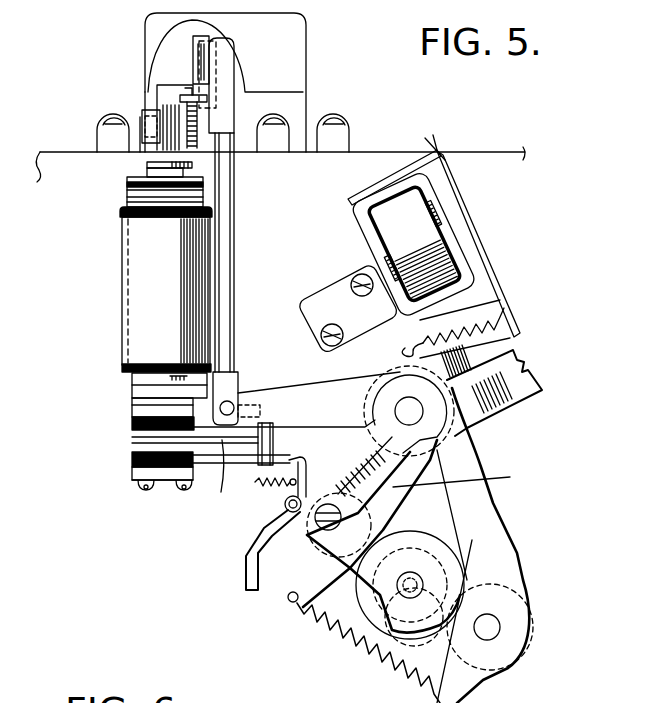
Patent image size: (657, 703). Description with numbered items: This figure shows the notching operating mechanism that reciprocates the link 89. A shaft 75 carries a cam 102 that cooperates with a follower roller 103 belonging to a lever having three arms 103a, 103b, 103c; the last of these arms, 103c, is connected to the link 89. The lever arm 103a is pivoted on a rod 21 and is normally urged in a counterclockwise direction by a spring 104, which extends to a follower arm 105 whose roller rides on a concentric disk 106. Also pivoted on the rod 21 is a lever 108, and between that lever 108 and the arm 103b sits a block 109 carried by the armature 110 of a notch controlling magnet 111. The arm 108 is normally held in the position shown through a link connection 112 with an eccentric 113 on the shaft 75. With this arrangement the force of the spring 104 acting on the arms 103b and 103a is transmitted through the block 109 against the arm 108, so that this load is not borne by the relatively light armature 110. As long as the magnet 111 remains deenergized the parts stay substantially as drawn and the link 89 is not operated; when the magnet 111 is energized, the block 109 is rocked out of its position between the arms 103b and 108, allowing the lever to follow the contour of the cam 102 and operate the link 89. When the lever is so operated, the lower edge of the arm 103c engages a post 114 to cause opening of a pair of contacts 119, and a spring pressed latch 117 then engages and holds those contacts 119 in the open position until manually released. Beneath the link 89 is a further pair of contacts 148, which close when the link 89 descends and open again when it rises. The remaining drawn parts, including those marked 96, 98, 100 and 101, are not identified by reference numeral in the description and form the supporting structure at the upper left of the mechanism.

The rod 21 is at (467, 433).
The shaft 75 is at (414, 624).
The link 89 is at (230, 202).
The guide plate 96 is at (204, 37).
The adjusting screw 98 is at (180, 84).
The solenoid 100 is at (143, 257).
The bracket 101 is at (158, 115).
The cam 102 is at (377, 622).
The follower roller 103 is at (323, 564).
The lever arm 103a is at (472, 478).
The lever arm 103b is at (540, 390).
The lever arm 103c is at (257, 393).
The spring 104 is at (407, 680).
The follower arm 105 is at (512, 548).
The concentric disk 106 is at (446, 651).
The lever 108 is at (357, 453).
The block 109 is at (517, 357).
The armature 110 is at (496, 283).
The notch controlling magnet 111 is at (413, 244).
The link connection 112 is at (390, 528).
The eccentric 113 is at (405, 577).
The post 114 is at (274, 442).
The spring pressed latch 117 is at (247, 535).
The contacts 119 is at (240, 457).
The contacts 148 is at (240, 428).